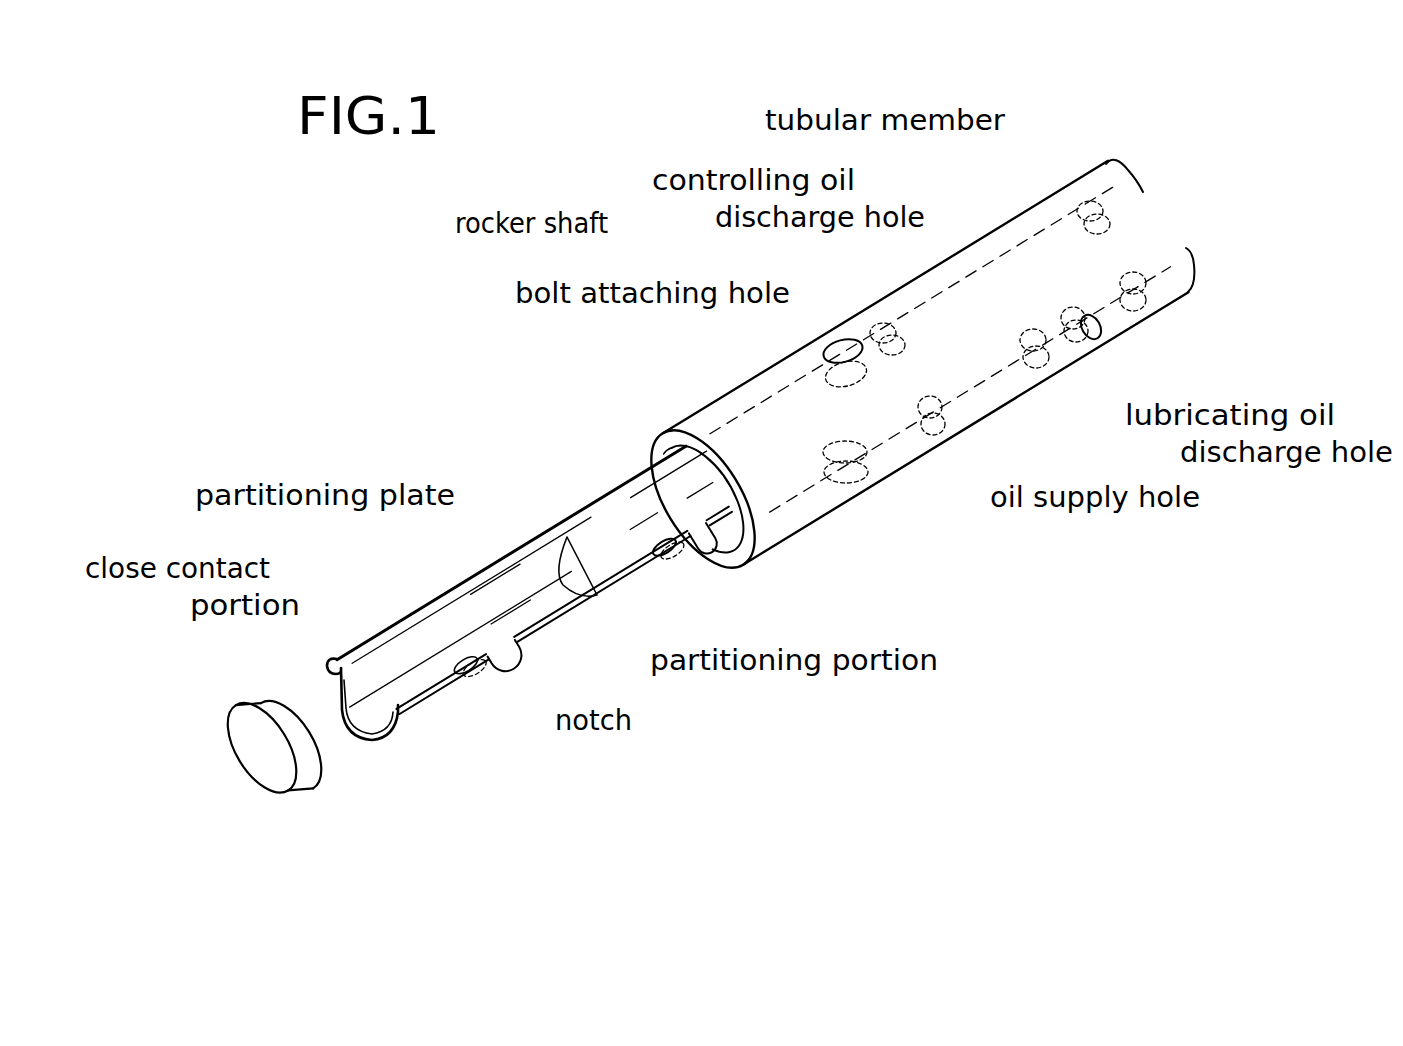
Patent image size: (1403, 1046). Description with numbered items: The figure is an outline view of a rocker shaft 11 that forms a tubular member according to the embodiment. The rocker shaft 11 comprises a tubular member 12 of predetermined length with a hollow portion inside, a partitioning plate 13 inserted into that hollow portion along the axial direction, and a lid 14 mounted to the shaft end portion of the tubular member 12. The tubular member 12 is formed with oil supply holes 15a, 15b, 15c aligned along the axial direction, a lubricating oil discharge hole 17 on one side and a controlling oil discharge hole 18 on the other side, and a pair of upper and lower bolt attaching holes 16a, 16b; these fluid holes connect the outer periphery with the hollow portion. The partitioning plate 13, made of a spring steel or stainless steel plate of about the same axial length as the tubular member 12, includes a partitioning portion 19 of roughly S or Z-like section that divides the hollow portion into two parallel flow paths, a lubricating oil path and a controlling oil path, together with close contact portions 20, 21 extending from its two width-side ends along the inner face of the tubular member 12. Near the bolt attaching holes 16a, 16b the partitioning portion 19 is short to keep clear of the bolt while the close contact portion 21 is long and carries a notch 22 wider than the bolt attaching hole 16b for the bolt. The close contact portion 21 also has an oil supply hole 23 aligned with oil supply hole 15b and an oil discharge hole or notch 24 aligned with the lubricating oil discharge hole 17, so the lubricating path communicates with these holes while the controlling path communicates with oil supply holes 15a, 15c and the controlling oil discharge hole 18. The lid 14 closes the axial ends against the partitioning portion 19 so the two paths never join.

The rocker shaft 11 is at (688, 242).
The tubular member 12 is at (961, 254).
The partitioning plate 13 is at (514, 589).
The lid 14 is at (261, 705).
The oil supply hole 15a is at (936, 437).
The oil supply hole 15b is at (1039, 374).
The oil supply hole 15c is at (1140, 320).
The bolt attaching hole 16a is at (840, 344).
The bolt attaching hole 16b is at (847, 485).
The lubricating oil discharge hole 17 is at (1091, 342).
The controlling oil discharge hole 18 is at (878, 322).
The partitioning portion 19 is at (607, 570).
The close contact portion 20 is at (336, 657).
The close contact portion 21 is at (433, 712).
The notch 22 is at (511, 672).
The oil supply hole 23 is at (663, 547).
The oil discharge hole (notch) 24 is at (702, 558).